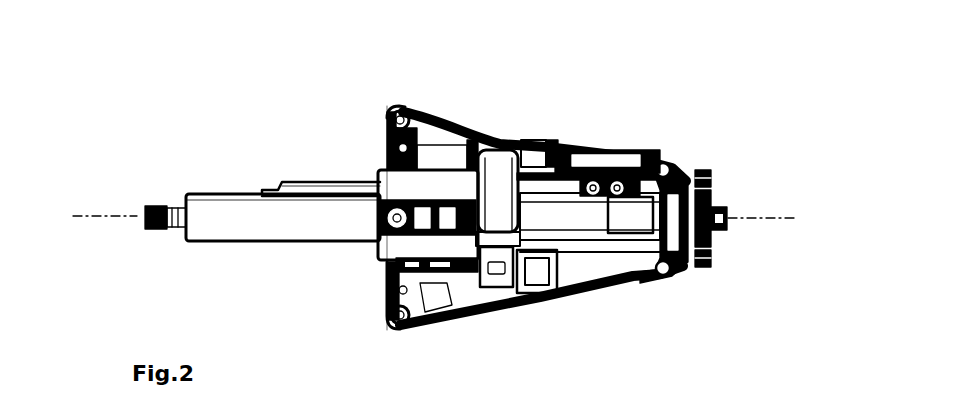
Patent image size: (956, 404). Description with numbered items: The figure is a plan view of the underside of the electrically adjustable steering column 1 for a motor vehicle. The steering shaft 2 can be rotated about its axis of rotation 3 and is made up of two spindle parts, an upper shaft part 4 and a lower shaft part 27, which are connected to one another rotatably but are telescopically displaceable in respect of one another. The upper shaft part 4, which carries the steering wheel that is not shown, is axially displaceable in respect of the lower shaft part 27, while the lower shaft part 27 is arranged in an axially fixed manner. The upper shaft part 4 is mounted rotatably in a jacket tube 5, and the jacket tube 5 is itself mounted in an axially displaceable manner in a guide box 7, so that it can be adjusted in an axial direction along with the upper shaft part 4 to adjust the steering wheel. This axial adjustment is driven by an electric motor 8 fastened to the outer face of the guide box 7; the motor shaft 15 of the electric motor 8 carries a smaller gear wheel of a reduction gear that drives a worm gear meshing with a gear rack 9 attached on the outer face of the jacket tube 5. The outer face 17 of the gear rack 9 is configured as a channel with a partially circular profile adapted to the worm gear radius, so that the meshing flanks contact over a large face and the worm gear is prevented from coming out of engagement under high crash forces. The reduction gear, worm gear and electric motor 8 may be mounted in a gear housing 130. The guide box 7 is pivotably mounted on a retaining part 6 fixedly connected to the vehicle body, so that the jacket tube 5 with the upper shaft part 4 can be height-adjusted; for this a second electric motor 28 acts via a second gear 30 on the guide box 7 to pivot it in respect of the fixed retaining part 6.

The steering column 1 is at (510, 100).
The steering shaft 2 is at (153, 243).
The axis of rotation 3 is at (123, 215).
The upper shaft part 4 is at (177, 212).
The jacket tube 5 is at (328, 222).
The retaining part 6 is at (392, 108).
The guide box 7 is at (597, 240).
The electric motor 8 is at (532, 148).
The gear rack 9 is at (312, 180).
The motor shaft 15 is at (560, 145).
The outer face of the gear rack 17 is at (360, 190).
The lower shaft part 27 is at (722, 210).
The second electric motor 28 is at (498, 158).
The second gear 30 is at (497, 290).
The gear housing 130 is at (452, 158).